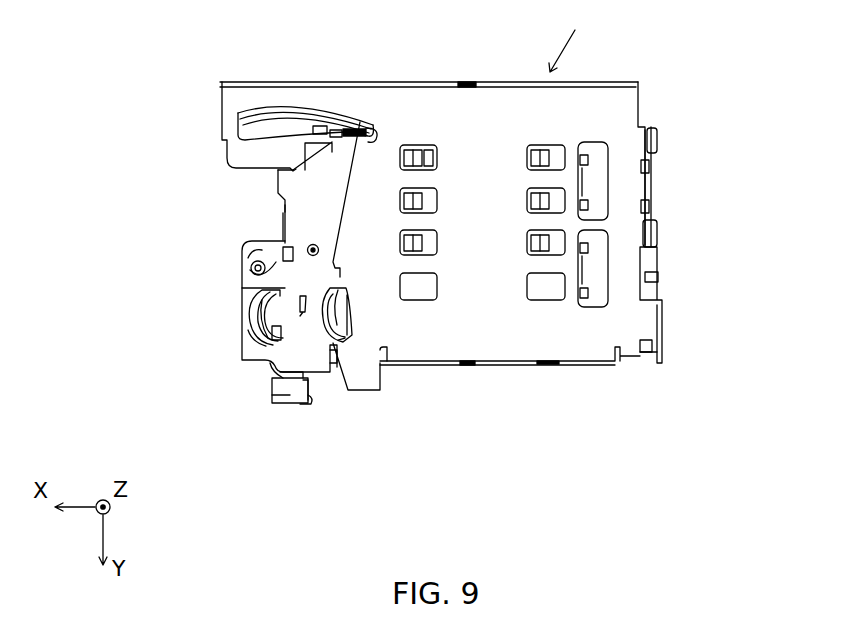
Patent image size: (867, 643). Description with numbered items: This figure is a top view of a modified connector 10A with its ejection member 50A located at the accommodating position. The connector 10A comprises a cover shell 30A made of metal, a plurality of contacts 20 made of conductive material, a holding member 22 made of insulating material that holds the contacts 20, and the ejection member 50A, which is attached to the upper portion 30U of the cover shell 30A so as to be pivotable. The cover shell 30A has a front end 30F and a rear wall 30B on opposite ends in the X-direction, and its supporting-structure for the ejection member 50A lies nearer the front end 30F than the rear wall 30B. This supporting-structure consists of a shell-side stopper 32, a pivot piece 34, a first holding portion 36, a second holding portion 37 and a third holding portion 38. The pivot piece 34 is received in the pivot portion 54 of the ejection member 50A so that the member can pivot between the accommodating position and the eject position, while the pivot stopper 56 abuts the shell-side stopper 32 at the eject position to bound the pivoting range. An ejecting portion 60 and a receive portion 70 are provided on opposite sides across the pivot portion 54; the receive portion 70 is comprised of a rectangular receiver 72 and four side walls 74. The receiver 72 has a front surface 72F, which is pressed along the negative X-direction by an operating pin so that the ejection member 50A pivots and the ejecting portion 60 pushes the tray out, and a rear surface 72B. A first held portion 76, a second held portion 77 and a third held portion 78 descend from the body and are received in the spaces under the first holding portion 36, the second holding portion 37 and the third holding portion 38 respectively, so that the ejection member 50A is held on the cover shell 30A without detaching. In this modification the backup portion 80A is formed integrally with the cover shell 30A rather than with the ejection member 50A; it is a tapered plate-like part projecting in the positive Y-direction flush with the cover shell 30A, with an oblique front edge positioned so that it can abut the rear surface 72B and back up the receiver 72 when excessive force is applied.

The connector 10A is at (602, 26).
The contacts 20 is at (413, 153).
The holding member 22 is at (430, 157).
The cover shell 30A is at (632, 112).
The upper portion 30U is at (690, 186).
The rear wall 30B is at (648, 186).
The front end 30F is at (221, 122).
The shell-side stopper 32 is at (243, 278).
The pivot piece 34 is at (247, 343).
The first holding portion 36 is at (358, 318).
The second holding portion 37 is at (250, 321).
The third holding portion 38 is at (297, 118).
The ejection member 50A is at (282, 213).
The pivot portion 54 is at (300, 313).
The pivot stopper 56 is at (283, 253).
The ejecting portion 60 is at (279, 190).
The receive portion 70 is at (291, 404).
The receiver 72 is at (288, 402).
The front surface 72F is at (225, 452).
The rear surface 72B is at (310, 386).
The side walls 74 is at (283, 391).
The first held portion 76 is at (370, 373).
The second held portion 77 is at (268, 307).
The third held portion 78 is at (351, 128).
The backup portion 80A is at (345, 340).